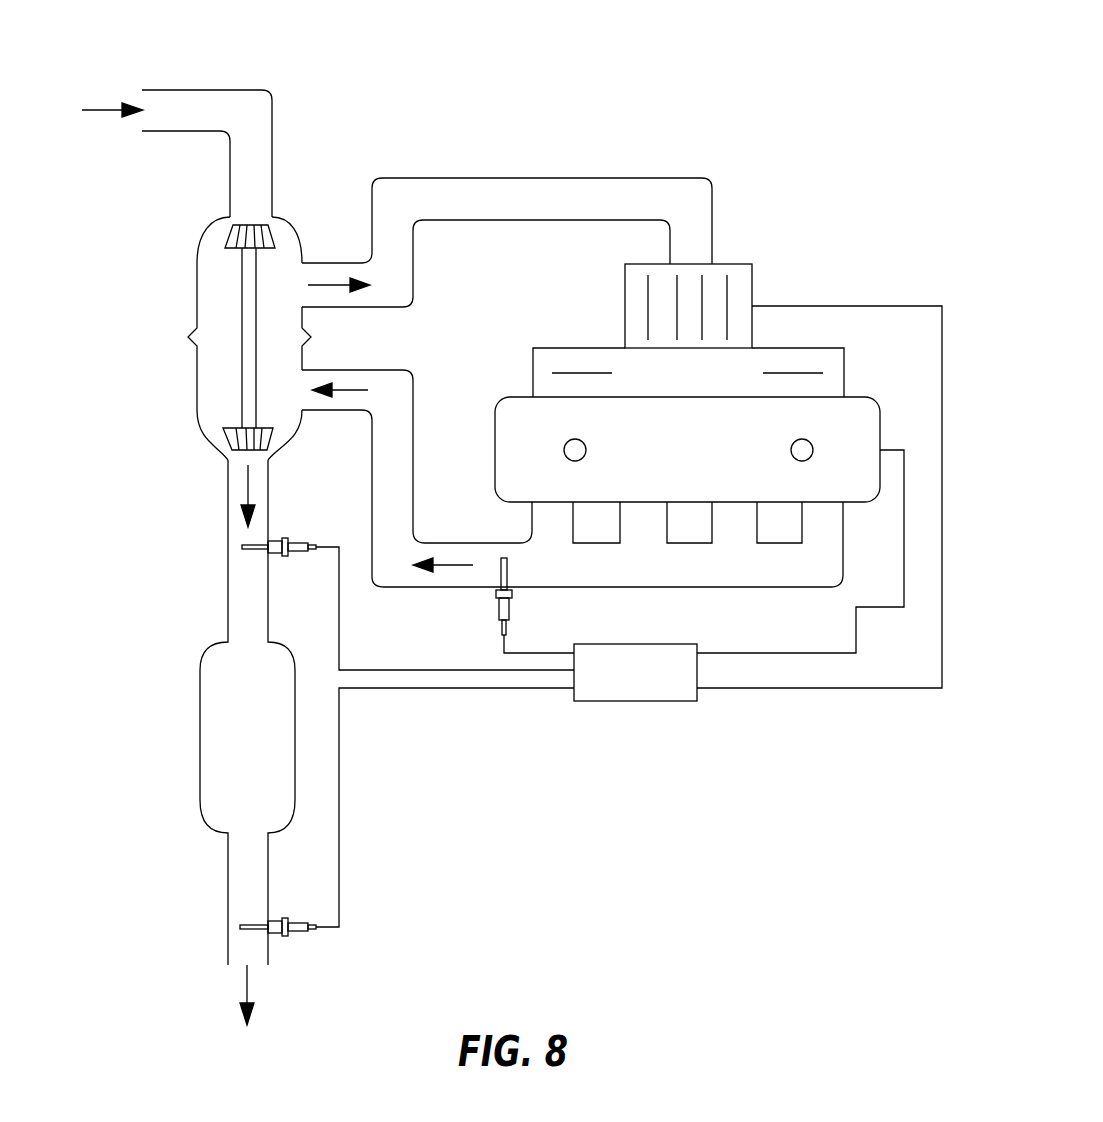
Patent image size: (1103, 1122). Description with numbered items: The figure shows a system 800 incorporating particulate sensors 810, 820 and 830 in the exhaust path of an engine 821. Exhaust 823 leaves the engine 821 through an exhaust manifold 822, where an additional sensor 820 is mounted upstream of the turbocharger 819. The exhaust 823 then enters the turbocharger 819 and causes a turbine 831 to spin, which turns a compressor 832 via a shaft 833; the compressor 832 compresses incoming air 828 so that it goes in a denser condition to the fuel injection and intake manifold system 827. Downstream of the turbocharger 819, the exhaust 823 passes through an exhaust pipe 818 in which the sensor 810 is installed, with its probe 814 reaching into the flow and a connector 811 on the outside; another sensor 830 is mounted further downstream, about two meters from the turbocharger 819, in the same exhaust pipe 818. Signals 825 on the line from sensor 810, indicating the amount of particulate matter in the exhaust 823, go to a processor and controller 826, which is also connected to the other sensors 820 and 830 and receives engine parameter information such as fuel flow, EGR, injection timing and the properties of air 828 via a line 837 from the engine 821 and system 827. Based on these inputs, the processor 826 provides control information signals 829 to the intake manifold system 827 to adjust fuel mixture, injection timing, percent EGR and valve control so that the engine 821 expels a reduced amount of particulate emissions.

The system 800 is at (842, 50).
The sensor 810 is at (300, 527).
The sensor connector 811 is at (285, 557).
The sensor probe 814 is at (254, 554).
The exhaust pipe 818 is at (227, 532).
The turbocharger 819 is at (188, 337).
The additional sensor 820 is at (530, 612).
The engine 821 is at (495, 450).
The exhaust manifold 822 is at (708, 588).
The exhaust 823 is at (247, 498).
The signals 825 is at (426, 660).
The processor and/or controller 826 is at (638, 644).
The fuel injection and intake manifold system 827 is at (754, 283).
The incoming air 828 is at (107, 109).
The control information signals 829 is at (926, 675).
The other sensor 830 is at (292, 905).
The turbine 831 is at (234, 443).
The compressor 832 is at (232, 242).
The shaft 833 is at (240, 338).
The line 837 is at (893, 449).